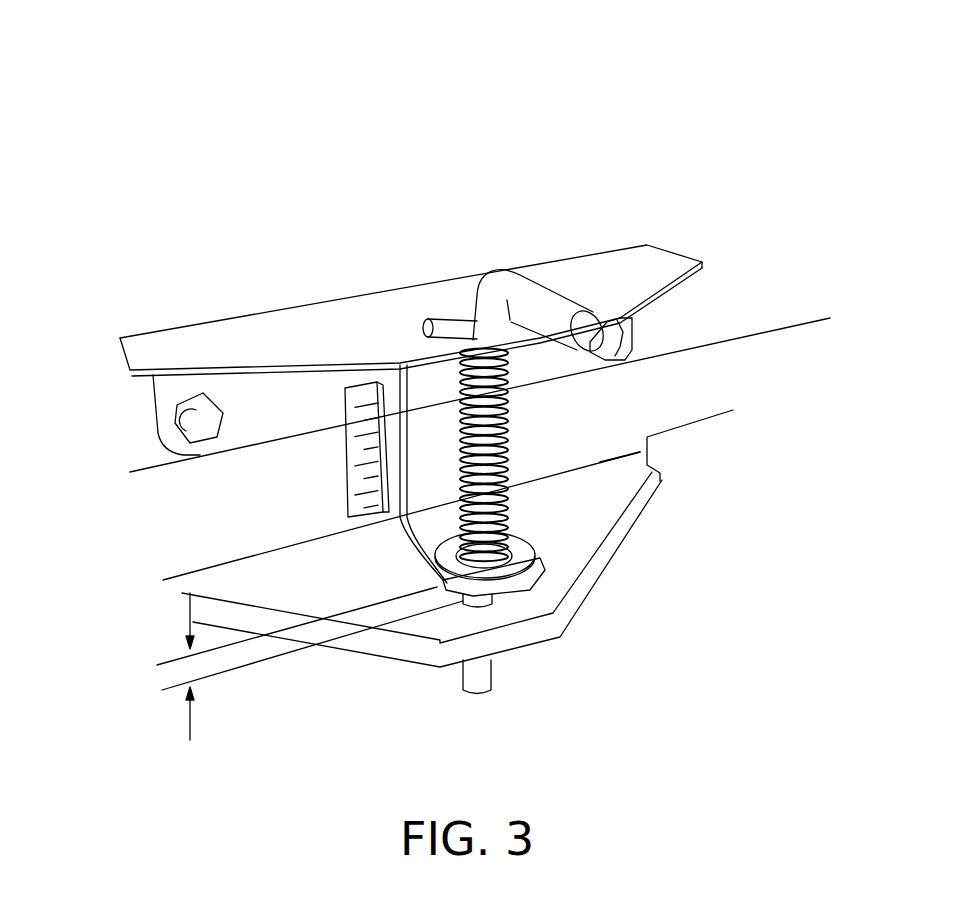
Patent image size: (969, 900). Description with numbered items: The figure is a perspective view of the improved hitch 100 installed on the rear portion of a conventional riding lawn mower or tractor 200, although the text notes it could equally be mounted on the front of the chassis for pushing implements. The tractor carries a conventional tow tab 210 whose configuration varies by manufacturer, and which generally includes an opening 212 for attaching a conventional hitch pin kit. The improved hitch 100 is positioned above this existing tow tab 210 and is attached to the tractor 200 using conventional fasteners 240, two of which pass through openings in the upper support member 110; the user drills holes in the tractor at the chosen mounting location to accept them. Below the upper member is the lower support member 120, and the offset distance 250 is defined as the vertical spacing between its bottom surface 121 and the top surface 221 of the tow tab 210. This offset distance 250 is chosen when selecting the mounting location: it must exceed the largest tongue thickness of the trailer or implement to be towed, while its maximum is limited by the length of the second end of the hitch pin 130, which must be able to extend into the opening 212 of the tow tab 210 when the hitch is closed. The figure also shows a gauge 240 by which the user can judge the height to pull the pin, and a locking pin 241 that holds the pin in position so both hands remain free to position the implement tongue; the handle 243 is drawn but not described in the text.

The improved hitch 100 is at (692, 205).
The riding lawn mower or tractor 200 is at (694, 134).
The upper support member 110 is at (270, 318).
The lower support member 120 is at (512, 554).
The bottom surface 121 is at (435, 549).
The hitch pin 130 is at (481, 677).
The tow tab 210 is at (480, 504).
The opening 212 is at (497, 589).
The top surface 221 is at (610, 507).
The fasteners 240 is at (175, 443).
The locking pin 241 is at (326, 454).
The lever handle 243 is at (407, 336).
The offset distance 250 is at (190, 727).